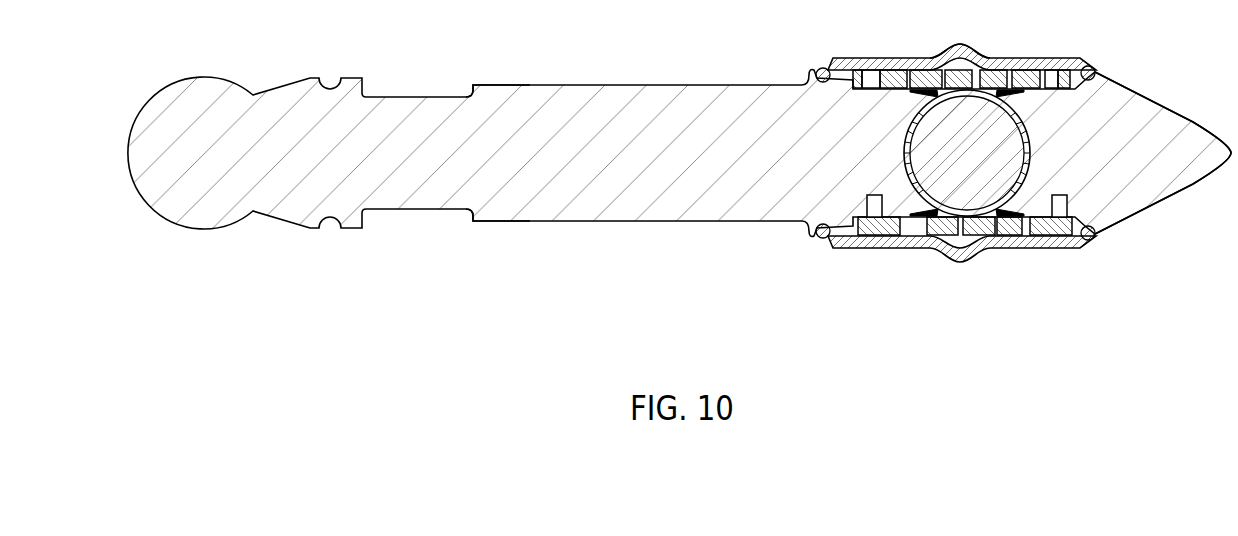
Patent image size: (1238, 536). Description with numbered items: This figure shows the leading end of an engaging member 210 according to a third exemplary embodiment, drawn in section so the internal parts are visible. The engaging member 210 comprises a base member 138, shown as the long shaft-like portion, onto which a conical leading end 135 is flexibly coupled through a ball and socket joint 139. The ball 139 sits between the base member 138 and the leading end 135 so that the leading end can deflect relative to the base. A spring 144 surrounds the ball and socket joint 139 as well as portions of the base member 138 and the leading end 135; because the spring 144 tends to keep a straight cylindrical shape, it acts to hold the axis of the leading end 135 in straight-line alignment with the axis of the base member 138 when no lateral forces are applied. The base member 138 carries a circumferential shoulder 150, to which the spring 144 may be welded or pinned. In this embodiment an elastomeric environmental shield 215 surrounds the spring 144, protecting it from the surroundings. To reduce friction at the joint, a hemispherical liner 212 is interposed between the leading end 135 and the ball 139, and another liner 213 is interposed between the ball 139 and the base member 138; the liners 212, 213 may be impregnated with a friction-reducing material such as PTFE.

The leading end 135 is at (1157, 204).
The base member 138 is at (739, 224).
The ball and socket joint 139 is at (978, 203).
The spring 144 is at (943, 230).
The circumferential shoulder 150 is at (812, 80).
The engaging member 210 is at (497, 84).
The hemispherical liner 212 is at (1024, 206).
The liner 213 is at (910, 206).
The elastomeric environmental shield 215 is at (984, 66).